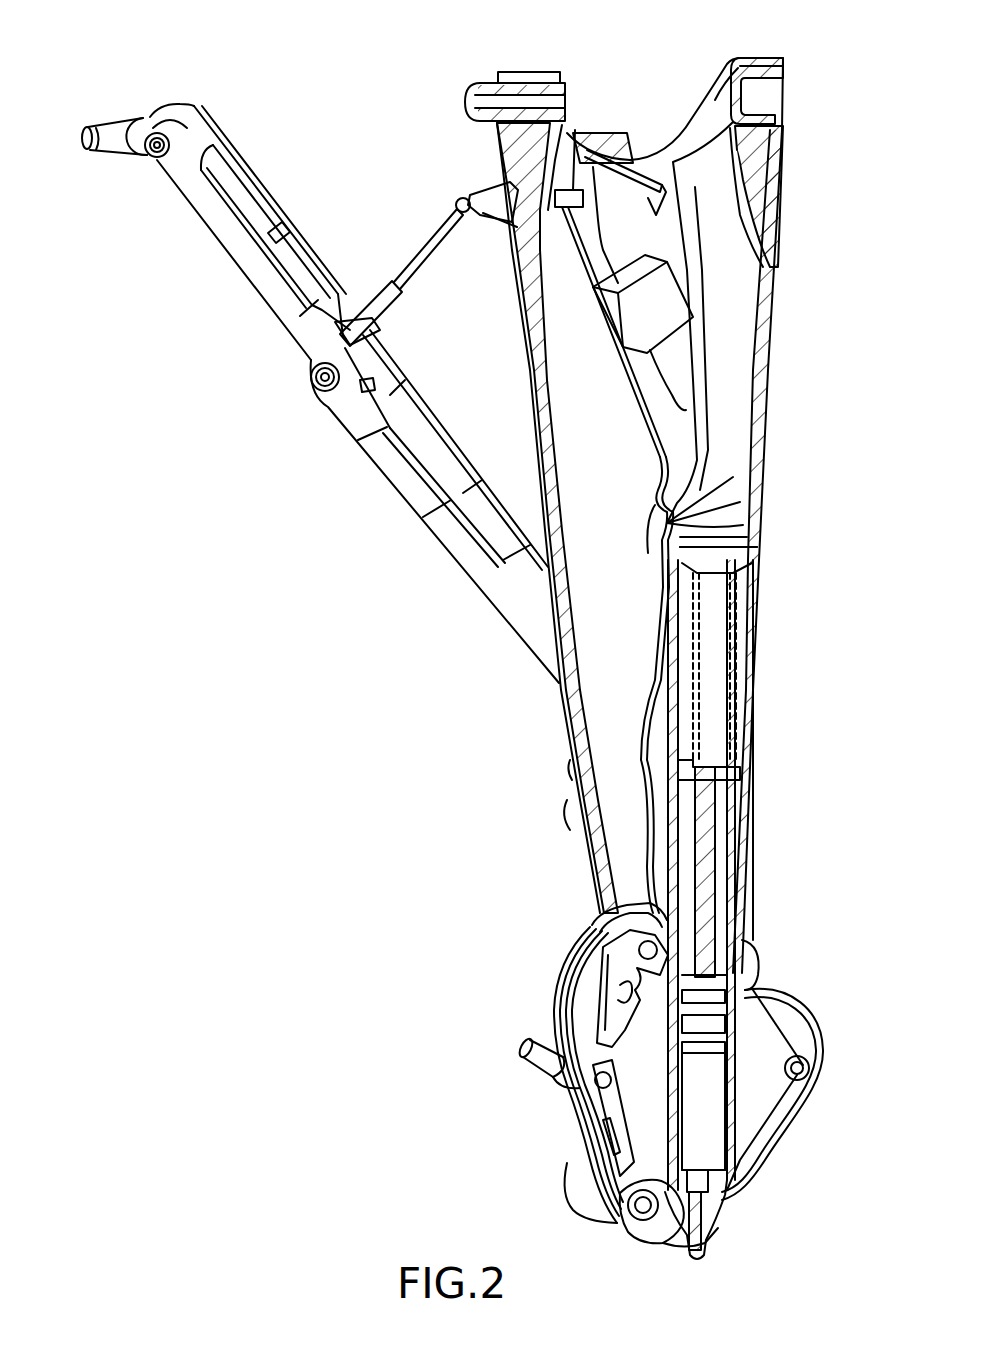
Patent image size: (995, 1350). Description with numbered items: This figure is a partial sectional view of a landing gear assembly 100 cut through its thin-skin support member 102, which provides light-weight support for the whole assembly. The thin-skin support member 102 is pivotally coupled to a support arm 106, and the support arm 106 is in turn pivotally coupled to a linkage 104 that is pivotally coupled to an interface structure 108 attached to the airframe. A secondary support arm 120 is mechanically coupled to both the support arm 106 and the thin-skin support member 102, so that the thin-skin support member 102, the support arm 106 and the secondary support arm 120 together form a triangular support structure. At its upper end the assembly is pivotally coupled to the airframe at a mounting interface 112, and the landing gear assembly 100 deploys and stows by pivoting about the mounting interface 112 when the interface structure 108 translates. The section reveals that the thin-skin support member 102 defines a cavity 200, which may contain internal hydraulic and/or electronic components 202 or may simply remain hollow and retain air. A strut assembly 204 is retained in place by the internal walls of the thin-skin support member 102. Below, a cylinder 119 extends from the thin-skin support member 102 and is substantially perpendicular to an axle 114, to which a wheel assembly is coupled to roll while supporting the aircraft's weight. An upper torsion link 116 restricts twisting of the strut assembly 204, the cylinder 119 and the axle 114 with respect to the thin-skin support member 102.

The landing gear assembly 100 is at (280, 68).
The thin-skin support member 102 is at (777, 193).
The linkage 104 is at (243, 245).
The support arm 106 is at (467, 540).
The interface structure 108 is at (123, 141).
The mounting interface 112 is at (758, 90).
The axle 114 is at (602, 1180).
The upper torsion link 116 is at (607, 995).
The cylinder 119 is at (667, 1100).
The secondary support arm 120 is at (420, 245).
The cavity 200 is at (720, 250).
The internal hydraulic and/or electronic components 202 is at (670, 317).
The strut assembly 204 is at (707, 1093).